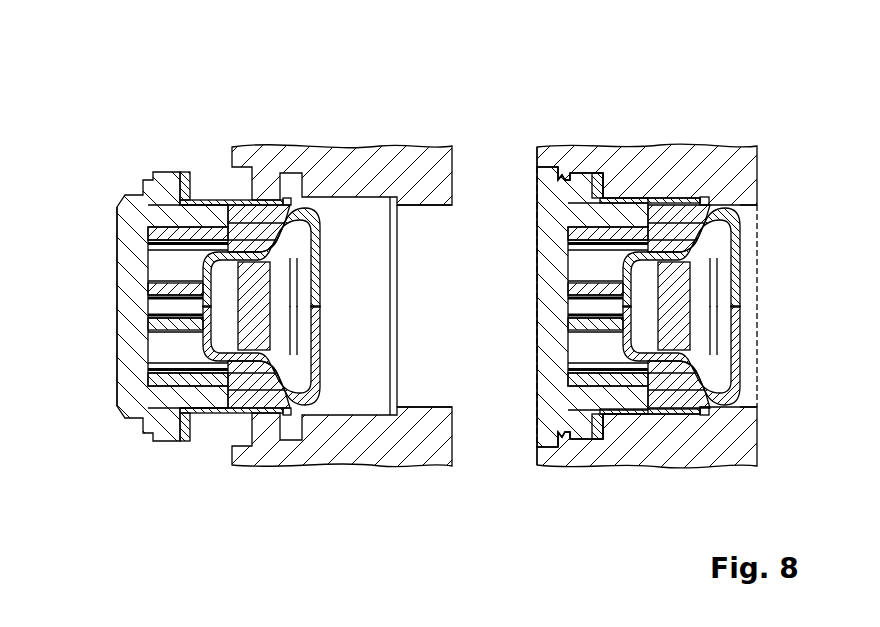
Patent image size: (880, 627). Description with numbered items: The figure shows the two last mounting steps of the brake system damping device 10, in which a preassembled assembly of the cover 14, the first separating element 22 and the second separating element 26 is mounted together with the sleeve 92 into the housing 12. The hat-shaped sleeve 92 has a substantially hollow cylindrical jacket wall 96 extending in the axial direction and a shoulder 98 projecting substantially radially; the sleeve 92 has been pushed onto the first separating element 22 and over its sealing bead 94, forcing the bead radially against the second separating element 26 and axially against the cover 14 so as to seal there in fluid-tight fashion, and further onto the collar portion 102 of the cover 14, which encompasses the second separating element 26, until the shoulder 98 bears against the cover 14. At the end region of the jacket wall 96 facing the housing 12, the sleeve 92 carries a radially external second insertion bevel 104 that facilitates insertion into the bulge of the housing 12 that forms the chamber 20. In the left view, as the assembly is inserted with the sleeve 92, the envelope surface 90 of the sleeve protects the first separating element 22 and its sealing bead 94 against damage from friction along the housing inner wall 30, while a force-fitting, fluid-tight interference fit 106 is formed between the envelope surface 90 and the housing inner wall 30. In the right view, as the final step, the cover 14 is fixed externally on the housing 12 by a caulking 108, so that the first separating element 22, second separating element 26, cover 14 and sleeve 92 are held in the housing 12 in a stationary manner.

The brake system damping device 10 is at (126, 116).
The housing 12 is at (405, 165).
The cover 14 is at (166, 432).
The chamber 20 is at (432, 328).
The first separating element 22 is at (302, 247).
The second separating element 26 is at (292, 398).
The housing inner wall 30 is at (356, 201).
The envelope surface 90 is at (248, 415).
The sleeve 92 is at (243, 198).
The sealing bead 94 is at (702, 415).
The jacket wall 96 is at (210, 415).
The shoulder 98 is at (190, 190).
The collar portion 102 is at (180, 205).
The second insertion bevel 104 is at (296, 196).
The interference fit 106 is at (663, 198).
The caulking 108 is at (570, 170).